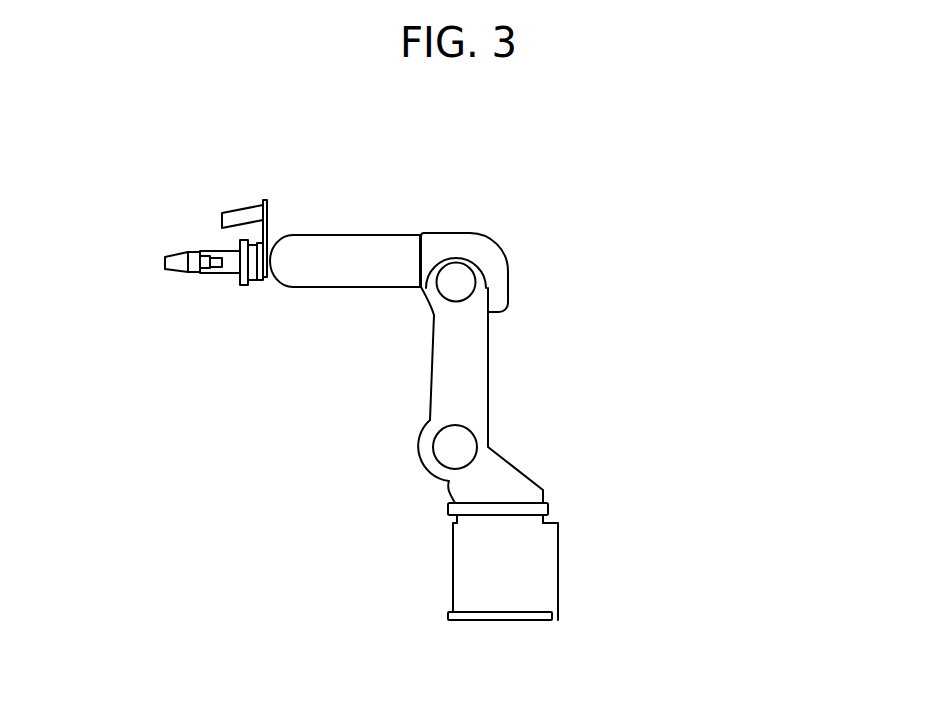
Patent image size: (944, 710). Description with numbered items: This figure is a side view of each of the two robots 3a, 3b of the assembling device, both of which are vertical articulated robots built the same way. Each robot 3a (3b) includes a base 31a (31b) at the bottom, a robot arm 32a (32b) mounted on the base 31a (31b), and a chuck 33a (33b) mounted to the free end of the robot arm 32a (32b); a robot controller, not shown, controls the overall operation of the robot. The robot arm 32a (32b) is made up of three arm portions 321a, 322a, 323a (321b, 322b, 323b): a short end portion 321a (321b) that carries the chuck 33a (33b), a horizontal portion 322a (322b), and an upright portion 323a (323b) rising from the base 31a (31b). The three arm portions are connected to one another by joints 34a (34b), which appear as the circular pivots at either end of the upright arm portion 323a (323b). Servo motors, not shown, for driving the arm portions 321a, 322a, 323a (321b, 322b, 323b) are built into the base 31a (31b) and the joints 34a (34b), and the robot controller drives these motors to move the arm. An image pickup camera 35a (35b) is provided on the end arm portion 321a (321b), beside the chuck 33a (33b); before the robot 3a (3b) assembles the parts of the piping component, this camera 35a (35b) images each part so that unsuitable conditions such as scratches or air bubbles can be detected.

The robot 3a is at (445, 369).
The robot 3b is at (646, 234).
The base 31a is at (580, 561).
The base 31b is at (550, 563).
The robot arm 32a is at (450, 314).
The robot arm 32b is at (464, 367).
The arm portion 321a is at (250, 331).
The arm portion 321b is at (255, 273).
The arm portion 322a is at (389, 218).
The arm portion 322b is at (363, 268).
The arm portion 323a is at (562, 380).
The arm portion 323b is at (470, 393).
The chuck 33a is at (186, 308).
The chuck 33b is at (215, 263).
The joints 34a is at (387, 330).
The joints 34b is at (455, 278).
The image pickup camera 35a is at (257, 197).
The image pickup camera 35b is at (243, 217).